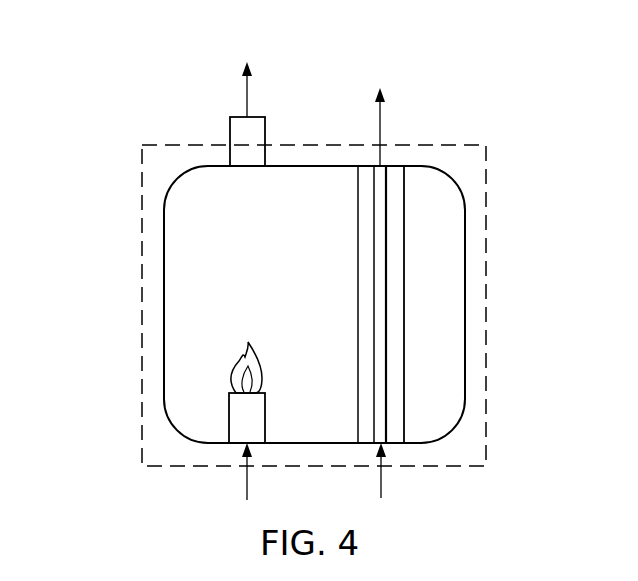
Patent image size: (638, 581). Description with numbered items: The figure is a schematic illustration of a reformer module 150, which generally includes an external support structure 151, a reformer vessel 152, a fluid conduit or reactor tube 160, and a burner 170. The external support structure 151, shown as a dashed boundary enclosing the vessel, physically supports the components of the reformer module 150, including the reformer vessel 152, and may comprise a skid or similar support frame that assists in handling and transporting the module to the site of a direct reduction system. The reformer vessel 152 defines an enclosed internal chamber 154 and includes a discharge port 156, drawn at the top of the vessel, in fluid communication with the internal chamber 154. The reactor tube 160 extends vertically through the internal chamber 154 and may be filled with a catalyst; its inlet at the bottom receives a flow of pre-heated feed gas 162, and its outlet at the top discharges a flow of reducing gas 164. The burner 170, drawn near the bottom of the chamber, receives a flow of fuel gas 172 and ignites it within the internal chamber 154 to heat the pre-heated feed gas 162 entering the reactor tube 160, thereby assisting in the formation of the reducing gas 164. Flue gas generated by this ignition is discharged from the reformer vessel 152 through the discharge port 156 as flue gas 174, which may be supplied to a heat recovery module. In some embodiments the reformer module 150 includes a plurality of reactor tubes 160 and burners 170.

The reformer module 150 is at (104, 66).
The external support structure 151 is at (134, 246).
The reformer vessel 152 is at (164, 340).
The internal chamber 154 is at (442, 228).
The discharge port 156 is at (230, 128).
The reactor tube 160 is at (357, 307).
The pre-heated feed gas 162 is at (381, 481).
The reducing gas 164 is at (380, 128).
The burner 170 is at (265, 415).
The fuel gas 172 is at (247, 482).
The flue gas 174 is at (247, 94).